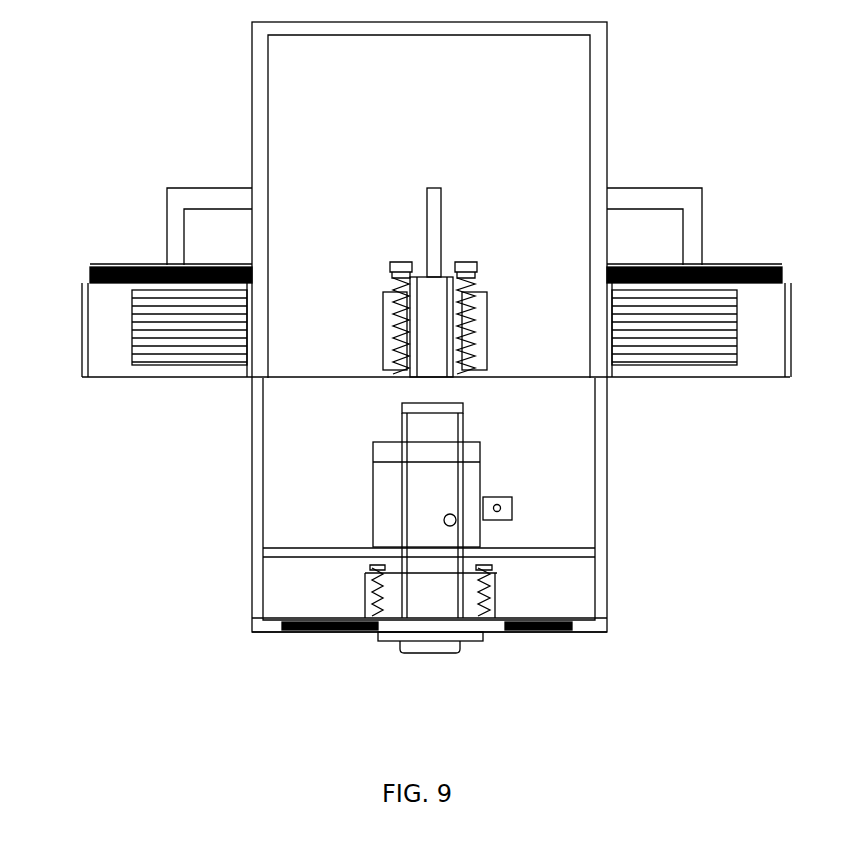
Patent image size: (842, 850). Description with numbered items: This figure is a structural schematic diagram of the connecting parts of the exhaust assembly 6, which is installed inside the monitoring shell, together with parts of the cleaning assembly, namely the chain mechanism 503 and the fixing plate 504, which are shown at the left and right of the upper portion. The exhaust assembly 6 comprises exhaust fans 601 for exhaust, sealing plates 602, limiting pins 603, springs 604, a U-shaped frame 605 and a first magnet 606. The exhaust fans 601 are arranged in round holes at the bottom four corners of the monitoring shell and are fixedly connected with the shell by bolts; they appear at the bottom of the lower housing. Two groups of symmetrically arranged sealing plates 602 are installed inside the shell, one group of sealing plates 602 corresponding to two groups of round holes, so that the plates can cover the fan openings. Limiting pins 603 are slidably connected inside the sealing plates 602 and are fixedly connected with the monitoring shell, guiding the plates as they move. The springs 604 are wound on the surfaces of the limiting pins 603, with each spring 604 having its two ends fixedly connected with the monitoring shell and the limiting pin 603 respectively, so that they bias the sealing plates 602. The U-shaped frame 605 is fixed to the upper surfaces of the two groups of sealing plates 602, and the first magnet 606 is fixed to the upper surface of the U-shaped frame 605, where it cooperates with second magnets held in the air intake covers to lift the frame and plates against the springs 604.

The chain mechanism 503 is at (115, 265).
The fixing plate 504 is at (90, 268).
The exhaust assembly 6 is at (613, 638).
The exhaust fans 601 is at (282, 620).
The sealing plates 602 is at (572, 617).
The limiting pins 603 is at (483, 622).
The springs 604 is at (498, 575).
The U-shaped frame 605 is at (400, 610).
The first magnet 606 is at (400, 403).